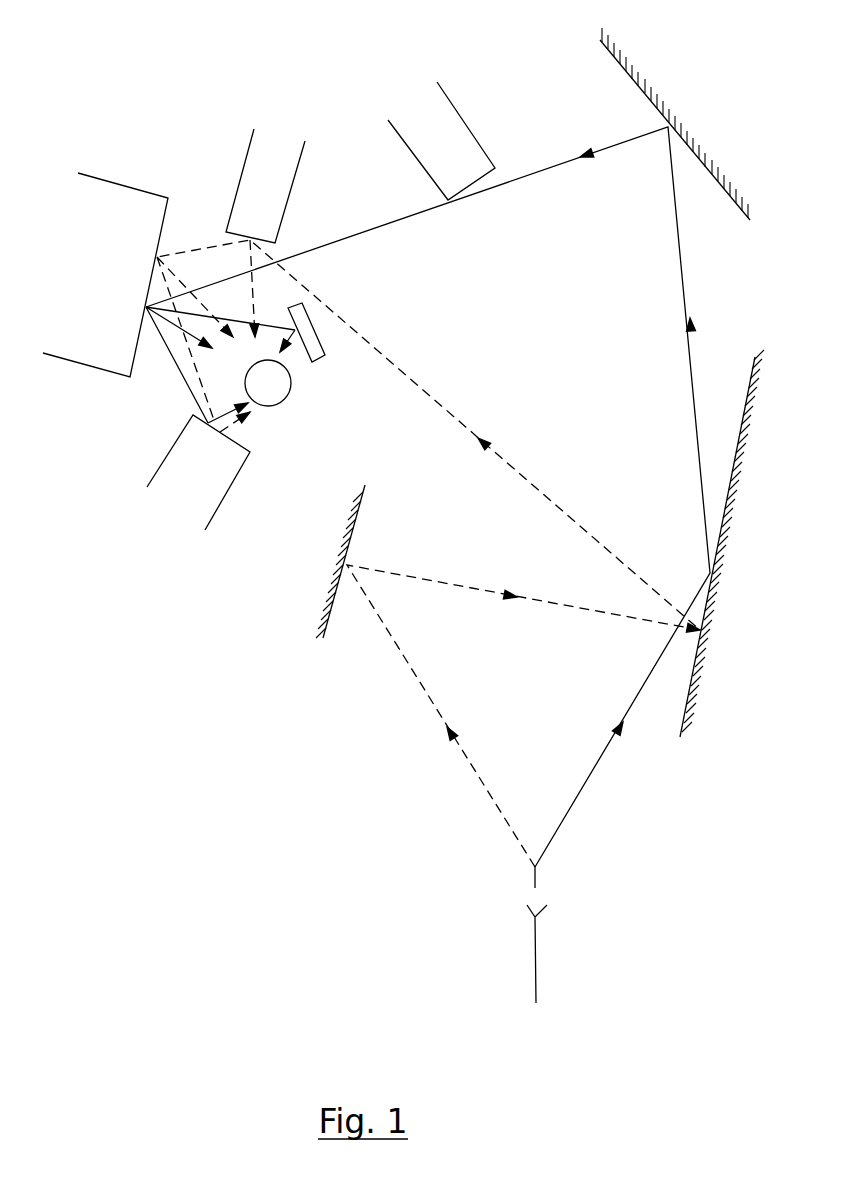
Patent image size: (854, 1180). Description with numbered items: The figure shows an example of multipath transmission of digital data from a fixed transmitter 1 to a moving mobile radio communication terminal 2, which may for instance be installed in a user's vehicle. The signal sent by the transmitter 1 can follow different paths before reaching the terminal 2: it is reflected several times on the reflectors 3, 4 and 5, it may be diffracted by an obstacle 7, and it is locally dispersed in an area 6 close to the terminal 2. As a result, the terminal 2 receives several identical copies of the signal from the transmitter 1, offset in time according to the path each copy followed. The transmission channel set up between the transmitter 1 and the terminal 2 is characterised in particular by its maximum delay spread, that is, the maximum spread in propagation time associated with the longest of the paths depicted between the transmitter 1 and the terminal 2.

The transmitter 1 is at (537, 967).
The mobile radio communication terminal 2 is at (292, 388).
The reflector 3 is at (337, 593).
The reflector 4 is at (737, 450).
The reflector 5 is at (643, 97).
The area of local dispersion 6 is at (75, 455).
The obstacle 7 is at (425, 172).